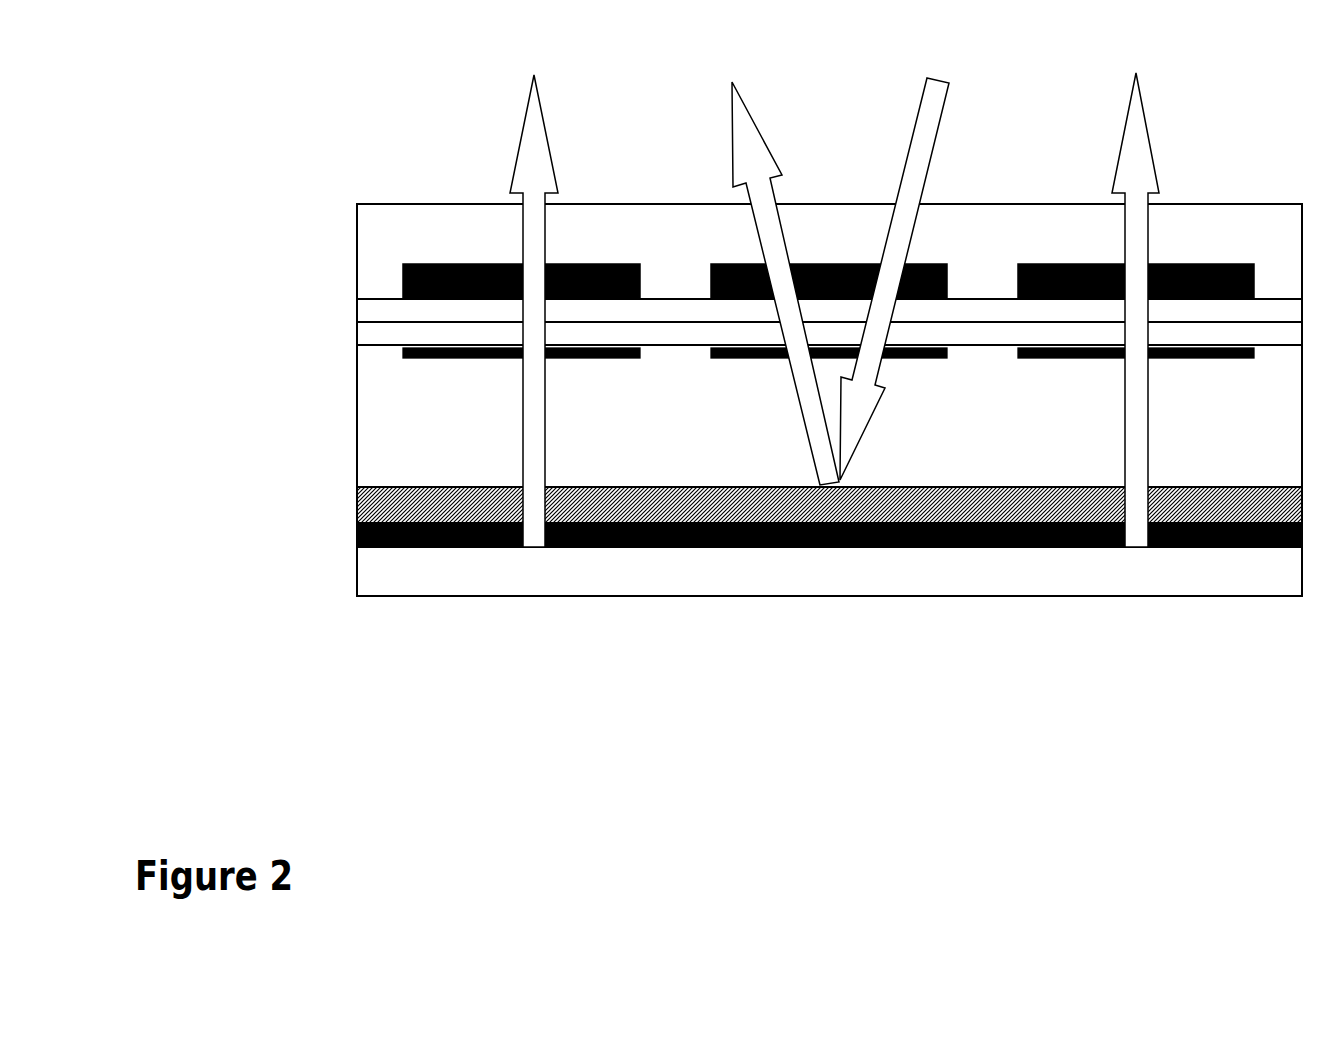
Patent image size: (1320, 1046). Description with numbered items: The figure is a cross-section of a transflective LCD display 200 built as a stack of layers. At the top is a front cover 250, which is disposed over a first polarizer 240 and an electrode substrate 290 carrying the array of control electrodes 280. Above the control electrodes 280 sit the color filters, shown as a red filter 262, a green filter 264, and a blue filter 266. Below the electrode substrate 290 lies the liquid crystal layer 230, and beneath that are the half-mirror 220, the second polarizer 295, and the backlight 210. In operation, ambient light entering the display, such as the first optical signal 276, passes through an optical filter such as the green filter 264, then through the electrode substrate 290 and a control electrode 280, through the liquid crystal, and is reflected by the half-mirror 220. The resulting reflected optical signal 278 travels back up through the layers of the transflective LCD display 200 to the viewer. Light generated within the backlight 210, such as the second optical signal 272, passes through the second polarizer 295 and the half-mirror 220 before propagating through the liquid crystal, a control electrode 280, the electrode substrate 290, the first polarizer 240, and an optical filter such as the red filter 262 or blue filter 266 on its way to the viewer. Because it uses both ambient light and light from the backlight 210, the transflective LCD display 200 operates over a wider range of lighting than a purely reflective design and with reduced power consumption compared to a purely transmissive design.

The transflective LCD display 200 is at (921, 694).
The backlight 210 is at (473, 583).
The half-mirror 220 is at (345, 502).
The liquid crystal layer 230 is at (345, 418).
The first polarizer 240 is at (345, 313).
The front cover 250 is at (345, 225).
The red filter 262 is at (463, 253).
The green filter 264 is at (720, 248).
The blue filter 266 is at (1100, 252).
The second optical signal 272 is at (819, 287).
The first optical signal 276 is at (894, 254).
The reflected optical signal 278 is at (772, 256).
The control electrodes 280 is at (1023, 371).
The electrode substrate 290 is at (345, 348).
The second polarizer 295 is at (345, 537).